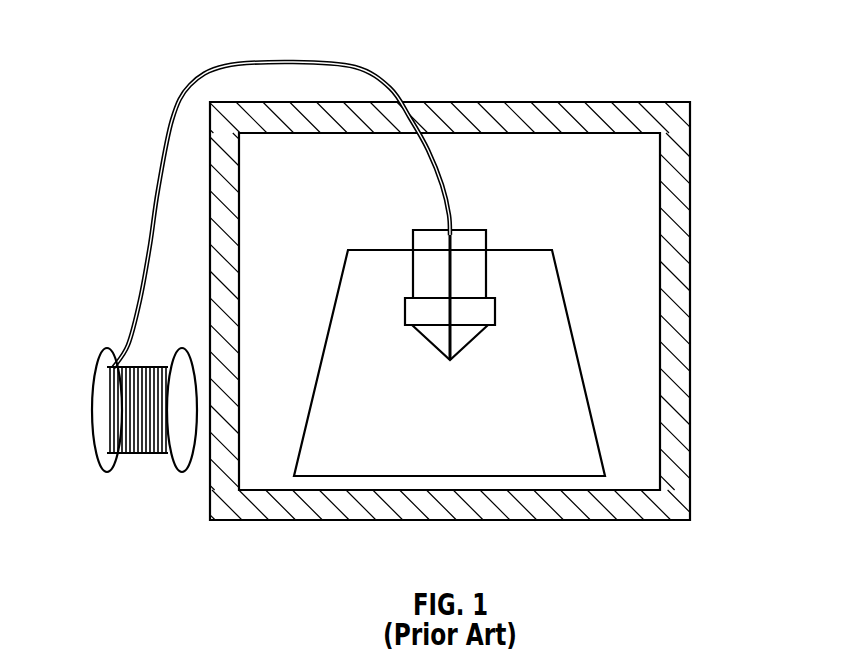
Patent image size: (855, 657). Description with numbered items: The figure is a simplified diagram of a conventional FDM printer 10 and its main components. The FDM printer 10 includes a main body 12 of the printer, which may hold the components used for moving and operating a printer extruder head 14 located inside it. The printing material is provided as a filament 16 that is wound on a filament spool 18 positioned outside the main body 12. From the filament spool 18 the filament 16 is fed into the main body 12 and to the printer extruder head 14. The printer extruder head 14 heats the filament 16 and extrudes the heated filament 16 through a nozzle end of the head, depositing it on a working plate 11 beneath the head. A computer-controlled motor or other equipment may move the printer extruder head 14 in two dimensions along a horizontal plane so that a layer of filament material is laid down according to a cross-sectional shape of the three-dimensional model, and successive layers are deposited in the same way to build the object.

The FDM printer 10 is at (134, 34).
The working plate 11 is at (573, 442).
The main body 12 is at (682, 310).
The printer extruder head 14 is at (468, 230).
The filament 16 is at (148, 207).
The filament spool 18 is at (92, 411).